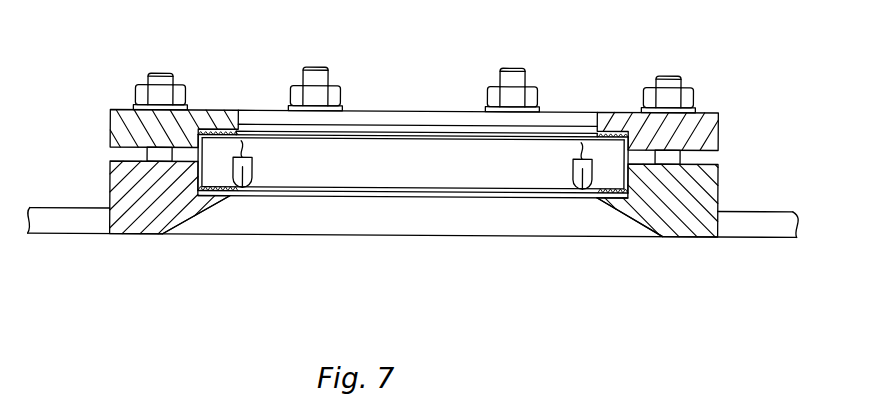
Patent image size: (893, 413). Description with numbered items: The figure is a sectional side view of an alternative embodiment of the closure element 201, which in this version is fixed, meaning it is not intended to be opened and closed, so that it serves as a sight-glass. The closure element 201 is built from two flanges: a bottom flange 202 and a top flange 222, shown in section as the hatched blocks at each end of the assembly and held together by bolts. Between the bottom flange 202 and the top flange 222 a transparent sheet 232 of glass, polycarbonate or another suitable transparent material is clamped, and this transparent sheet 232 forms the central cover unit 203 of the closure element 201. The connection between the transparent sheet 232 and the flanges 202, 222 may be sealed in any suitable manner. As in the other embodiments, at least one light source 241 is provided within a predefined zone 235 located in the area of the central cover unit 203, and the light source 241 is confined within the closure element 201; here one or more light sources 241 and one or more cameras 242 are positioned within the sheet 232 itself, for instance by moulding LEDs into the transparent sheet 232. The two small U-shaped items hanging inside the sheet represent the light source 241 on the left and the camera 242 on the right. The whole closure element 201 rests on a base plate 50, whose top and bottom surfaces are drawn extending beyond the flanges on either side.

The closure element 201 is at (119, 55).
The top flange 222 is at (137, 127).
The bottom flange 202 is at (128, 221).
The transparent sheet 232 is at (420, 172).
The central cover unit 203 is at (513, 205).
The predefined zone 235 is at (313, 262).
The light source 241 is at (242, 186).
The camera 242 is at (582, 188).
The base plate 50 is at (758, 237).